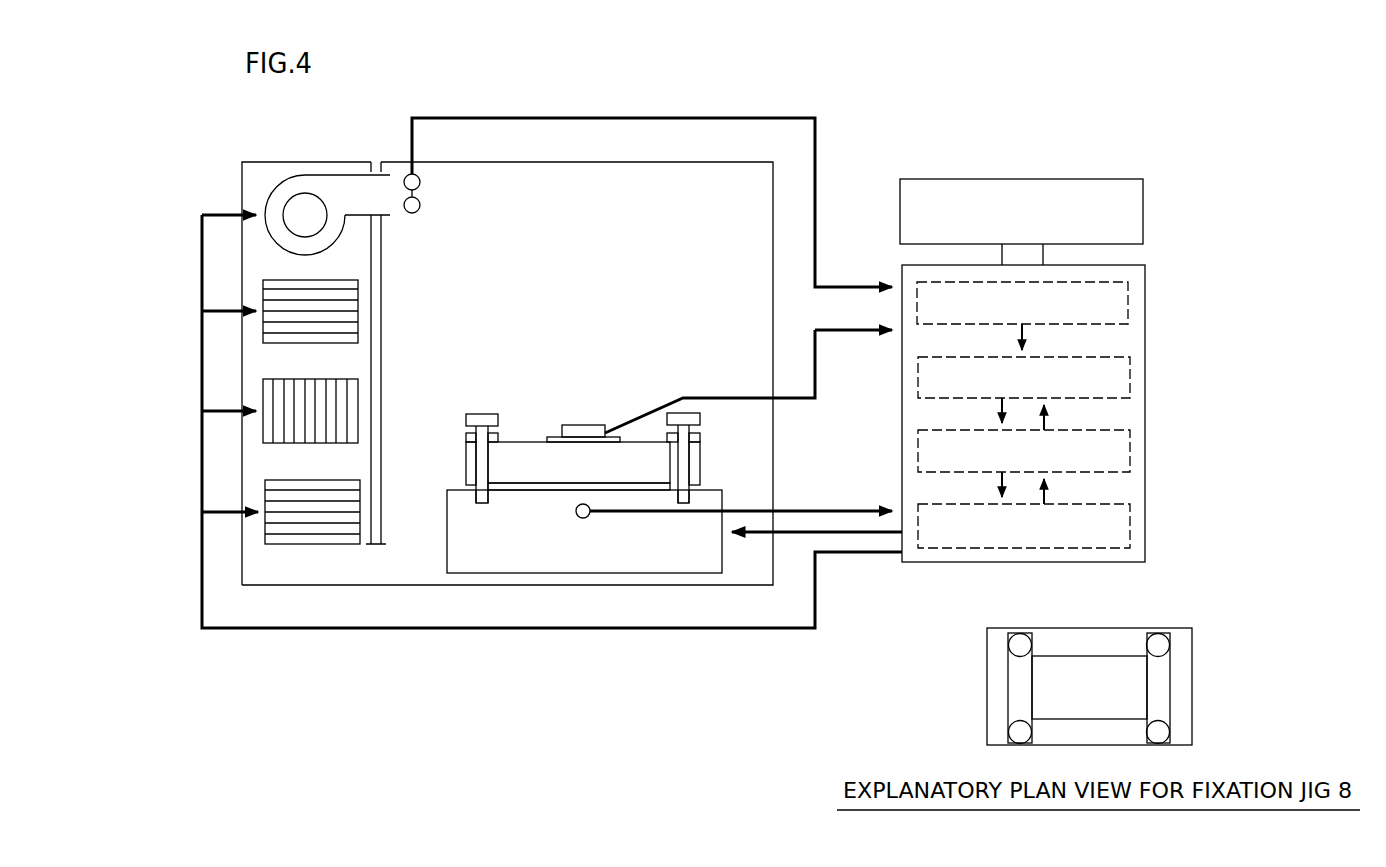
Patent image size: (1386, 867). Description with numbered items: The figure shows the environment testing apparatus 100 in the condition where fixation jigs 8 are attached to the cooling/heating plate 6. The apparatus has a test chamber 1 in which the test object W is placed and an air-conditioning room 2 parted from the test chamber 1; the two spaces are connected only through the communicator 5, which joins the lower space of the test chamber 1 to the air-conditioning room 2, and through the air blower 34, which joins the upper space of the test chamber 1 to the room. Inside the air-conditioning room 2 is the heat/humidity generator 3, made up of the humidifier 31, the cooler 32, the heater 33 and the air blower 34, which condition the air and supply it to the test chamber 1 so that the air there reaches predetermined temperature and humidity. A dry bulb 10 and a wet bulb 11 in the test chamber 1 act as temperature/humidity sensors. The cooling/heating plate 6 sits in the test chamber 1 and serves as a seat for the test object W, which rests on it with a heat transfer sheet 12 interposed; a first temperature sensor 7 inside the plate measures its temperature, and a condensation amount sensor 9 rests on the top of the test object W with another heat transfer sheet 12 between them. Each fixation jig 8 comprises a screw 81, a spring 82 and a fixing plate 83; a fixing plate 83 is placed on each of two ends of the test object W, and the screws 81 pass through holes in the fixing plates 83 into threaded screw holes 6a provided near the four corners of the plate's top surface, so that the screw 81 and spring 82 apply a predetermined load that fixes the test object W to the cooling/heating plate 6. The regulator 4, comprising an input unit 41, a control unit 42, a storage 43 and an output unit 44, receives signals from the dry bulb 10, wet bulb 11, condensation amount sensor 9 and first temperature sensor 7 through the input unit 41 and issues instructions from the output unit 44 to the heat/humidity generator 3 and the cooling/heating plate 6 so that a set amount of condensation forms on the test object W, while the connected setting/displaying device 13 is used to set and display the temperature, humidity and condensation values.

The environment testing apparatus 100 is at (1056, 114).
The test chamber 1 is at (567, 331).
The air-conditioning room 2 is at (251, 268).
The heat/humidity generator 3 is at (317, 349).
The humidifier 31 is at (291, 545).
The cooler 32 is at (287, 444).
The heater 33 is at (287, 344).
The air blower 34 is at (266, 188).
The regulator 4 is at (1145, 265).
The input unit 41 is at (1022, 303).
The control unit 42 is at (1024, 377).
The storage 43 is at (1024, 451).
The output unit 44 is at (1024, 526).
The communicator 5 is at (386, 563).
The cooling/heating plate 6 is at (473, 561).
The screw hole 6a is at (481, 506).
The first temperature sensor 7 is at (591, 507).
The fixation jig 8 is at (826, 562).
The screw 81 is at (480, 413).
The spring 82 is at (466, 431).
The fixing plate 83 is at (500, 432).
The condensation amount sensor 9 is at (586, 424).
The dry bulb 10 is at (420, 182).
The wet bulb 11 is at (420, 205).
The heat transfer sheet 12 is at (550, 436).
The setting/displaying device 13 is at (1021, 222).
The test object W is at (584, 475).